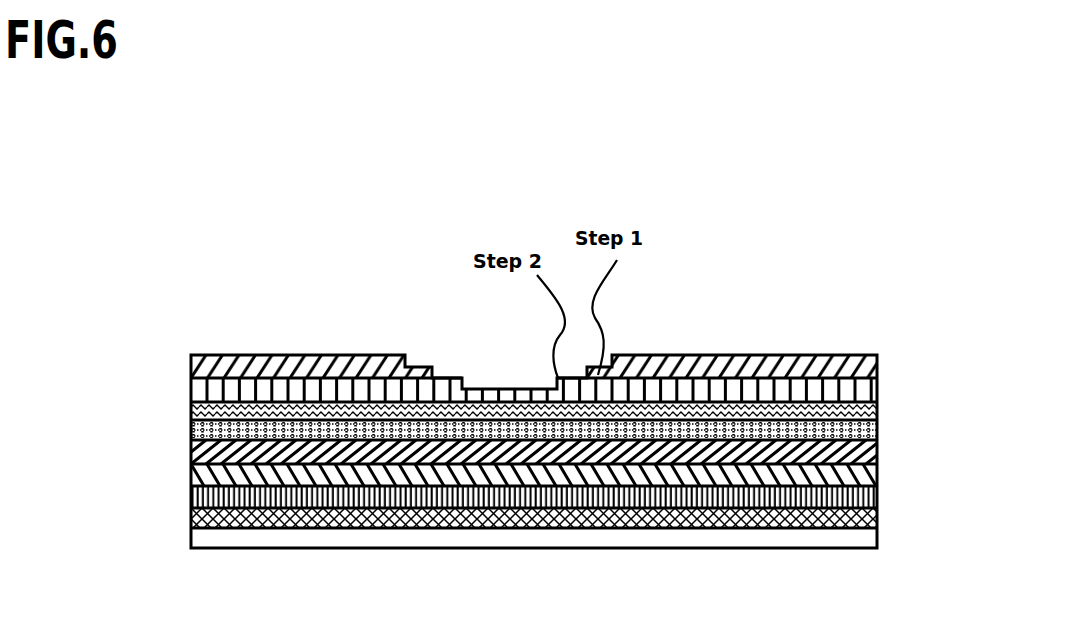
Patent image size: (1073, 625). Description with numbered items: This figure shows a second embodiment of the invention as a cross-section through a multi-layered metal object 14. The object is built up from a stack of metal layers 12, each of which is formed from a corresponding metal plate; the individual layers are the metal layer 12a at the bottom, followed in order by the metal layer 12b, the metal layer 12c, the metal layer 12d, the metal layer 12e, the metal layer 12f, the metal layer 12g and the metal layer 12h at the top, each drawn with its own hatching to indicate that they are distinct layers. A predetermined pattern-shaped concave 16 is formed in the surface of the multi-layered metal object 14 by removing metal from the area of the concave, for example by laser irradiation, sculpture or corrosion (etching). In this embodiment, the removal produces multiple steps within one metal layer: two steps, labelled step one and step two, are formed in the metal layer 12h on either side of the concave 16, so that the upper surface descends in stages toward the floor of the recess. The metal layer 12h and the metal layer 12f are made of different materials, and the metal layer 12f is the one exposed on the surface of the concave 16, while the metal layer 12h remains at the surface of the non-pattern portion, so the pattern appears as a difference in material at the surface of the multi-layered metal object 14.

The metal layer 12 is at (979, 296).
The metal layer 12a is at (878, 518).
The metal layer 12b is at (878, 500).
The metal layer 12c is at (878, 477).
The metal layer 12d is at (878, 453).
The metal layer 12e is at (878, 432).
The metal layer 12f is at (878, 416).
The metal layer 12g is at (878, 398).
The metal layer 12h is at (878, 372).
The multi-layered metal object 14 is at (803, 544).
The concave 16 is at (490, 350).